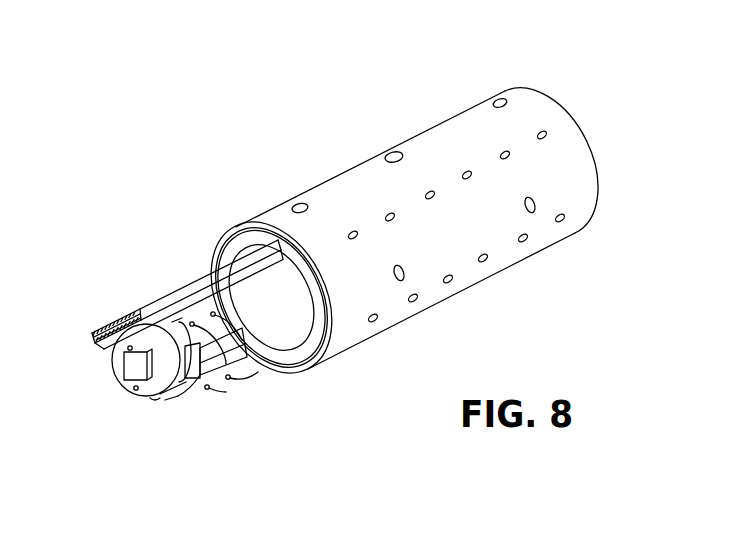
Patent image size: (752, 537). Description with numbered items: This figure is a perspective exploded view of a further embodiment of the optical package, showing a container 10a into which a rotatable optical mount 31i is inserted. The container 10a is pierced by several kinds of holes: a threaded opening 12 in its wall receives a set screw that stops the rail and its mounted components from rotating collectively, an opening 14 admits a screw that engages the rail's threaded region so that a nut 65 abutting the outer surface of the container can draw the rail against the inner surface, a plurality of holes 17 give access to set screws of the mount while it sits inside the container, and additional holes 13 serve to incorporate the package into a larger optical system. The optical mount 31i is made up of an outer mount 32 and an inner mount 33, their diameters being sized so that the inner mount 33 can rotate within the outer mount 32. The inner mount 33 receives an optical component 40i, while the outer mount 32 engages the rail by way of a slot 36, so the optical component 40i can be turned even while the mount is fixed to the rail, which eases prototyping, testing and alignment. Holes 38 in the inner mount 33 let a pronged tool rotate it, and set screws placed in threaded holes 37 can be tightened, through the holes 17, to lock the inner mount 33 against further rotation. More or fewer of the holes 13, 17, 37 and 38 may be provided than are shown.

The container 10a is at (453, 118).
The threaded opening 12 is at (300, 204).
The additional holes 13 is at (404, 280).
The opening 14 is at (392, 155).
The holes 17 is at (509, 158).
The nut 65 is at (184, 297).
The inner mount 33 is at (149, 333).
The holes 38 is at (127, 350).
The optical component 40i is at (152, 402).
The optical mount 31i is at (170, 404).
The outer mount 32 is at (185, 403).
The slot 36 is at (198, 387).
The threaded holes 37 is at (244, 342).